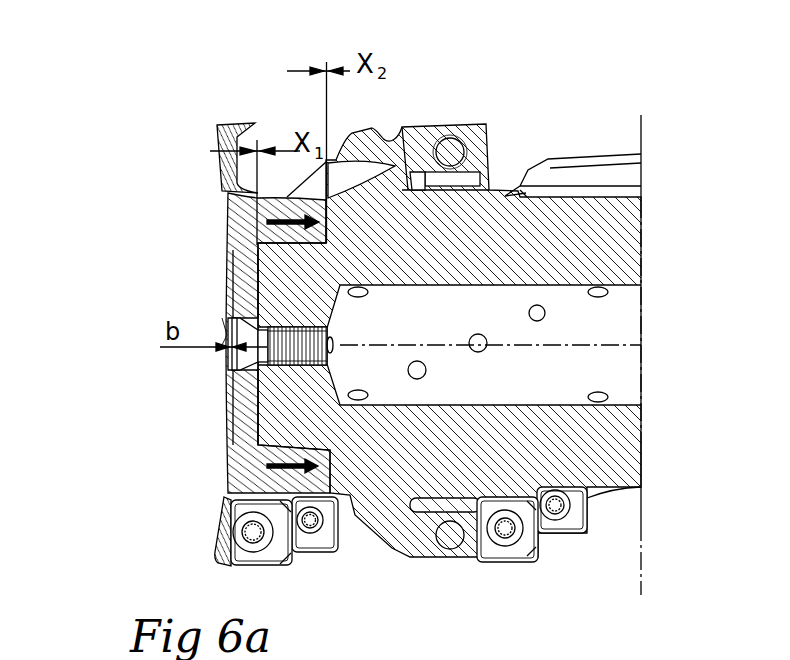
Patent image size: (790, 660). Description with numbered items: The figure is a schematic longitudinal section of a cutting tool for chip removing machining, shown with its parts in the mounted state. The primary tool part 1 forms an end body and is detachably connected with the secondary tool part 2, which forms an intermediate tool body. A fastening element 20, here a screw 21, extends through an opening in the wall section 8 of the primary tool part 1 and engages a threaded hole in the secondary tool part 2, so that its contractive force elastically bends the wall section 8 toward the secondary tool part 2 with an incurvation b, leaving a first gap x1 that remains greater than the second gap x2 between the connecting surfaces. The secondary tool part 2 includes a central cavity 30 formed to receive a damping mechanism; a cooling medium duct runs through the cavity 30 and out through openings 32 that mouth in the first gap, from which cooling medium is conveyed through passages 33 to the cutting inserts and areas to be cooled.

The primary tool part 1 is at (198, 192).
The secondary tool part 2 is at (523, 137).
The wall section 8 is at (243, 408).
The fastening element 20 is at (260, 339).
The screw 21 is at (253, 324).
The central cavity 30 is at (612, 334).
The openings 32 is at (331, 352).
The passages 33 is at (414, 361).